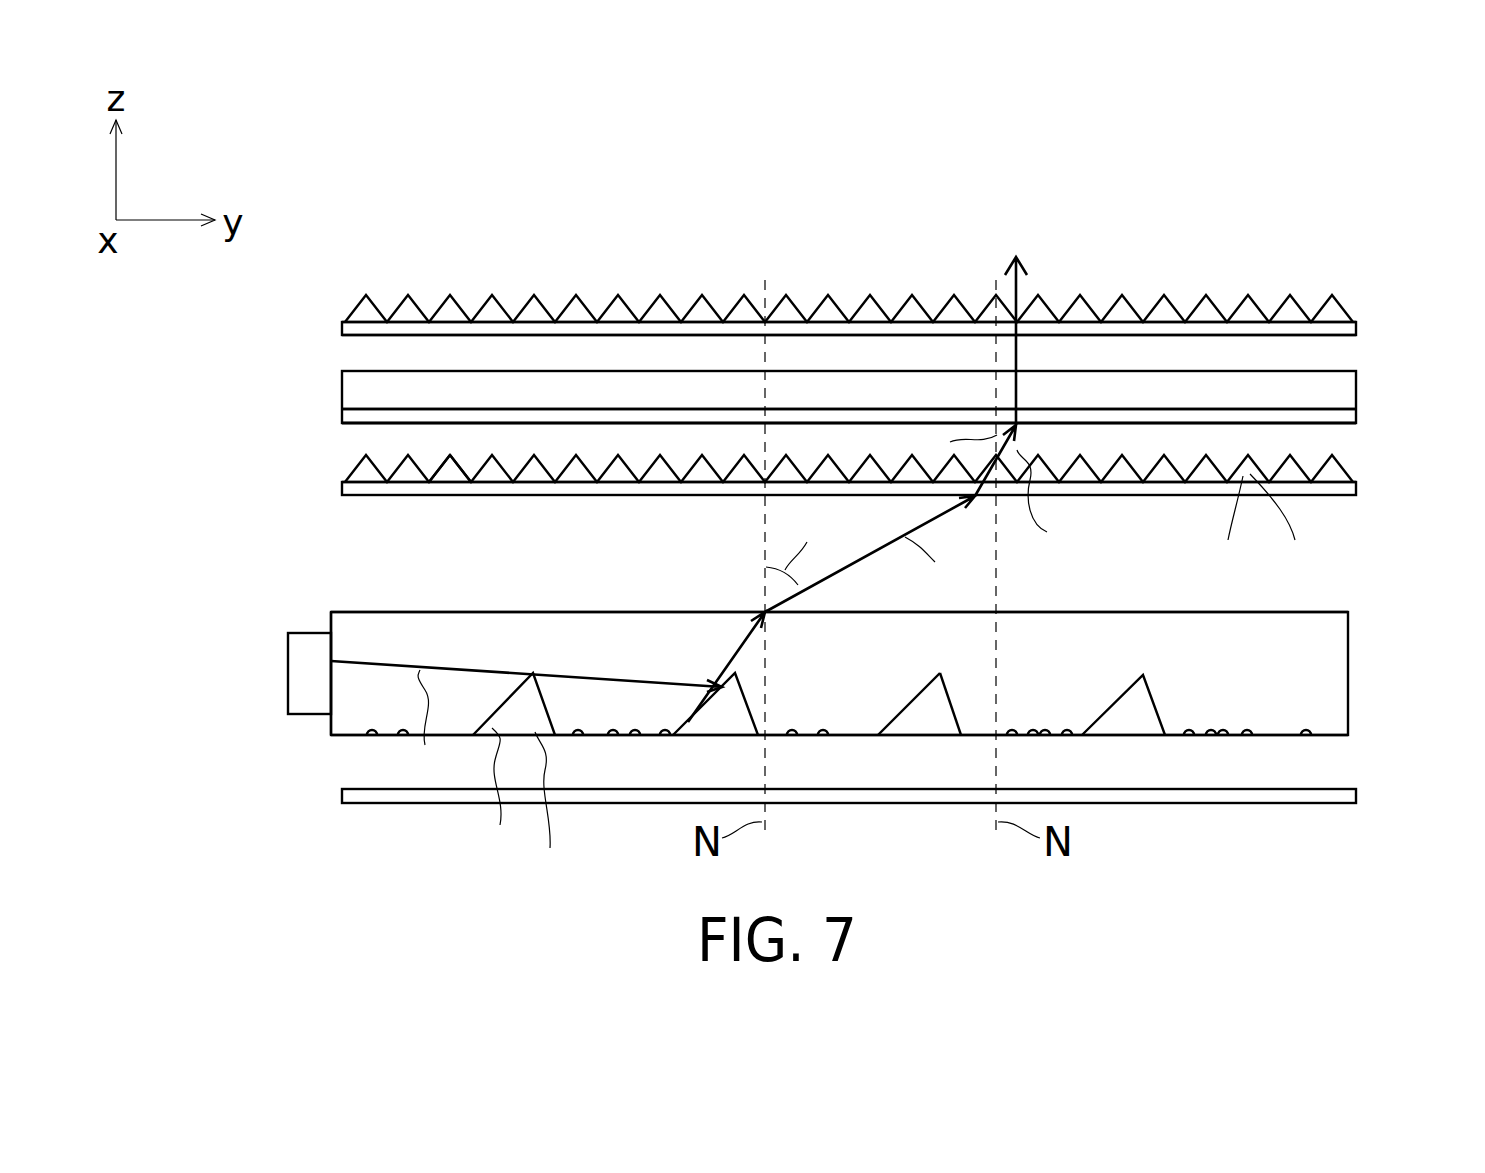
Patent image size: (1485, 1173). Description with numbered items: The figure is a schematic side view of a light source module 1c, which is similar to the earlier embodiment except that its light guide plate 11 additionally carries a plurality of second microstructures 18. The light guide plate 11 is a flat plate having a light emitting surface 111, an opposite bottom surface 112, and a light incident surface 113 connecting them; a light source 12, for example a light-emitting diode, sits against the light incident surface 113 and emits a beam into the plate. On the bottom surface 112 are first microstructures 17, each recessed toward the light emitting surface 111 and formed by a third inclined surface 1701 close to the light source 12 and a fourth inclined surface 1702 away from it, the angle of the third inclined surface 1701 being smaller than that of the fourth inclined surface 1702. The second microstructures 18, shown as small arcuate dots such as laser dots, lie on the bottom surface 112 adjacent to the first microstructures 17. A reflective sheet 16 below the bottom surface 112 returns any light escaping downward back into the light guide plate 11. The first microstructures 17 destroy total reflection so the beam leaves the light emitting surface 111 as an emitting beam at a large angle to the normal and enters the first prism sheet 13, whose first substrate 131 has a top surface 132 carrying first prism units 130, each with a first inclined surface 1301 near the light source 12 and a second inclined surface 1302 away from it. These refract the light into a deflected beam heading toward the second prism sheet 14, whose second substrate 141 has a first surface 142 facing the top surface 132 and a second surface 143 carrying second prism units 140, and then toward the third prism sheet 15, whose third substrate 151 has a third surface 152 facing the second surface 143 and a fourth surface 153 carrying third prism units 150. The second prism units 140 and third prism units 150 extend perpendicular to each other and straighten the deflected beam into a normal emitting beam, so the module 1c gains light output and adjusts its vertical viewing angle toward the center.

The light source module 1c is at (1332, 135).
The light guide plate 11 is at (1384, 644).
The light emitting surface 111 is at (335, 605).
The bottom surface 112 is at (345, 745).
The light incident surface 113 is at (320, 640).
The light source 12 is at (303, 675).
The first prism sheet 13 is at (1384, 469).
The first prism units 130 is at (575, 473).
The first inclined surface 1301 is at (429, 465).
The second inclined surface 1302 is at (473, 467).
The first substrate 131 is at (640, 488).
The top surface 132 is at (695, 491).
The second prism sheet 14 is at (1384, 384).
The second prism units 140 is at (722, 397).
The second substrate 141 is at (793, 418).
The first surface 142 is at (352, 425).
The second surface 143 is at (650, 412).
The third prism sheet 15 is at (1384, 307).
The third prism units 150 is at (1250, 310).
The third substrate 151 is at (1320, 328).
The third surface 152 is at (352, 338).
The fourth surface 153 is at (1187, 326).
The reflective sheet 16 is at (1384, 778).
The first microstructures 17 is at (1127, 718).
The third inclined surface 1701 is at (885, 718).
The fourth inclined surface 1702 is at (967, 715).
The second microstructures 18 is at (1245, 737).